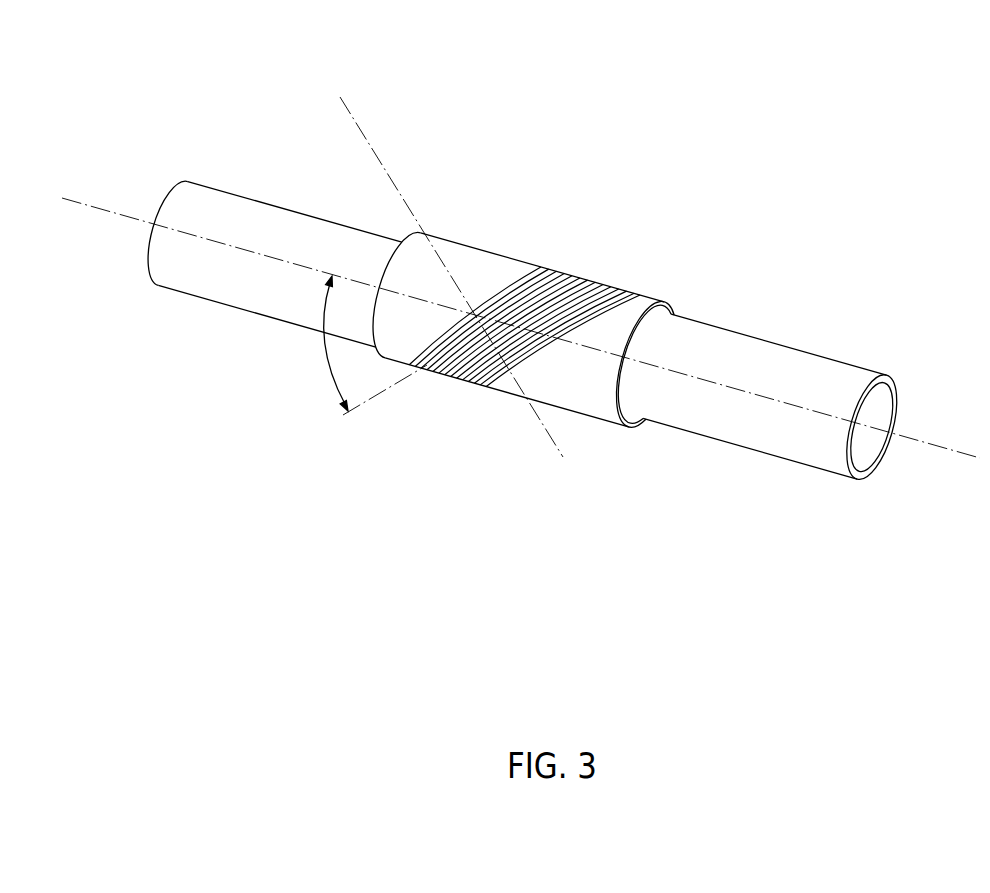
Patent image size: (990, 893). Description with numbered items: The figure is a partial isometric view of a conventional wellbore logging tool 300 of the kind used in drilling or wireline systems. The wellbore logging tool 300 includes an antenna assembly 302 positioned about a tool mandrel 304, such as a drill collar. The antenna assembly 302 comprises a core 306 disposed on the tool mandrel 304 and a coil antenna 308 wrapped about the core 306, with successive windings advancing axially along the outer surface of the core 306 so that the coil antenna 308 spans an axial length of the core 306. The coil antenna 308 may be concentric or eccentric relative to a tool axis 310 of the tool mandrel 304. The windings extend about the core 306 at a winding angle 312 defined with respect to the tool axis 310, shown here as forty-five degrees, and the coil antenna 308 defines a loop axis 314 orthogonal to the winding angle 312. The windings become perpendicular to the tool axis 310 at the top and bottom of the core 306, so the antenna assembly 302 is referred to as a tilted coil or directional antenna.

The wellbore logging tool 300 is at (845, 80).
The antenna assembly 302 is at (558, 257).
The tool mandrel 304 is at (770, 343).
The core 306 is at (453, 247).
The coil antenna 308 is at (607, 283).
The tool axis 310 is at (952, 450).
The winding angle 312 is at (330, 360).
The loop axis 314 is at (350, 116).